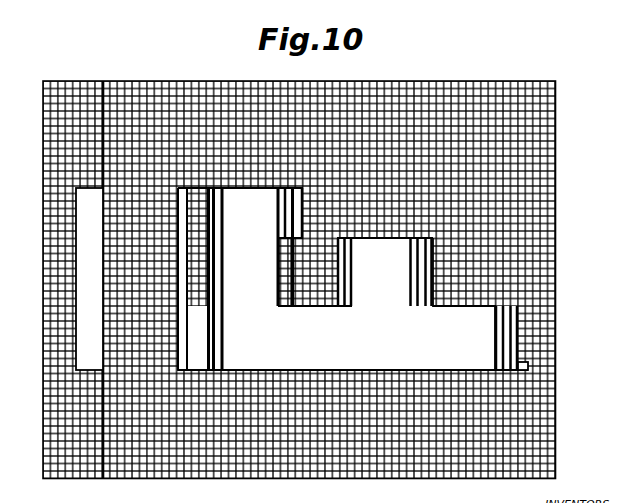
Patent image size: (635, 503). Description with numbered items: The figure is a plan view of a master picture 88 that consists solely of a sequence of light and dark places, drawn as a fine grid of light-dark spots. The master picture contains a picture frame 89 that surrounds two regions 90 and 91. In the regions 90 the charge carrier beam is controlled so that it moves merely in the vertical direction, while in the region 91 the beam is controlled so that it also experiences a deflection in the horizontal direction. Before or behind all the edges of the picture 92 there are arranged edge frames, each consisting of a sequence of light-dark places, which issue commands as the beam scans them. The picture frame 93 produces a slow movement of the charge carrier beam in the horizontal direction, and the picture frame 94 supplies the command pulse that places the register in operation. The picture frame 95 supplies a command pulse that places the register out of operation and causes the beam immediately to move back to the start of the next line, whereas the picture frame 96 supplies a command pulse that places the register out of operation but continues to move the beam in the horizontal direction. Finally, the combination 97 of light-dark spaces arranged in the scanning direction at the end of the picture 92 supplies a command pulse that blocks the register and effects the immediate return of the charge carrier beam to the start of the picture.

The master picture 88 is at (557, 113).
The picture frame 89 is at (79, 81).
The region 90 is at (70, 113).
The region 91 is at (90, 276).
The picture 92 is at (410, 353).
The picture frame 93 is at (178, 212).
The picture frame 94 is at (215, 322).
The picture frame 95 is at (291, 212).
The picture frame 96 is at (293, 275).
The combination of light-dark spaces 97 is at (519, 370).